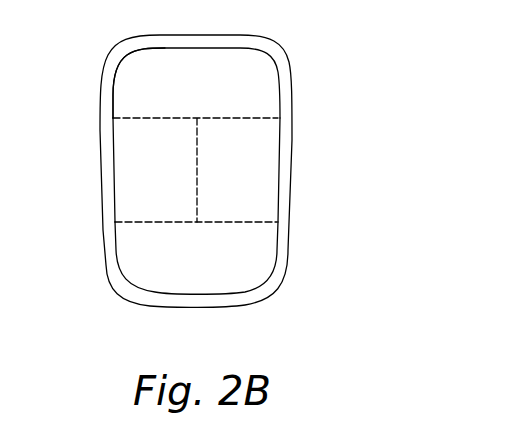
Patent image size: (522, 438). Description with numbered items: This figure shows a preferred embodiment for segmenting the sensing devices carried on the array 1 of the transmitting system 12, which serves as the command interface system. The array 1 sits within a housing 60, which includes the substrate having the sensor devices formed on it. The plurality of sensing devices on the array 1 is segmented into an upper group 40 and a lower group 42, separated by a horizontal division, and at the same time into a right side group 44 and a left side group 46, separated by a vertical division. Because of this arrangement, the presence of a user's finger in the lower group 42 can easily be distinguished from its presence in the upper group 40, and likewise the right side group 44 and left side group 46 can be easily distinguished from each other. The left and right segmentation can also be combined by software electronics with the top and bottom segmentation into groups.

The array 1 is at (135, 80).
The transmitting system 12 is at (203, 173).
The upper group 40 is at (238, 82).
The lower group 42 is at (243, 273).
The right side group 44 is at (265, 170).
The left side group 46 is at (138, 180).
The housing 60 is at (292, 240).